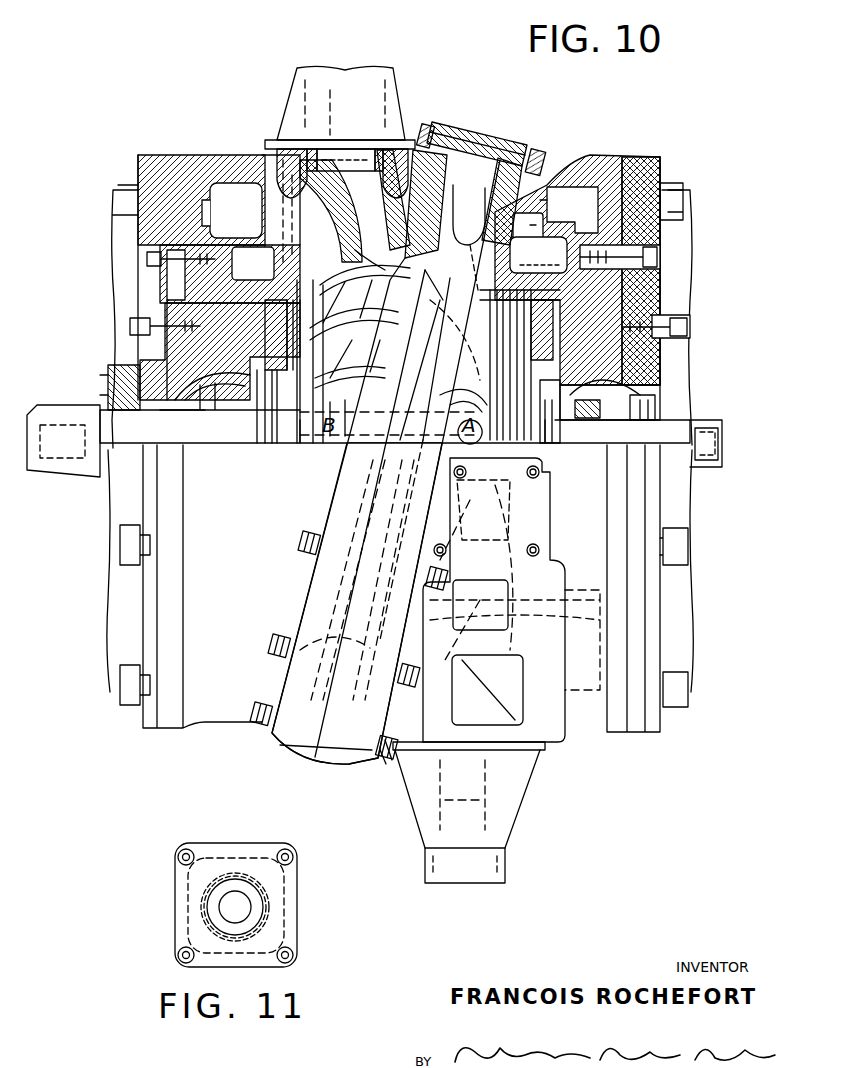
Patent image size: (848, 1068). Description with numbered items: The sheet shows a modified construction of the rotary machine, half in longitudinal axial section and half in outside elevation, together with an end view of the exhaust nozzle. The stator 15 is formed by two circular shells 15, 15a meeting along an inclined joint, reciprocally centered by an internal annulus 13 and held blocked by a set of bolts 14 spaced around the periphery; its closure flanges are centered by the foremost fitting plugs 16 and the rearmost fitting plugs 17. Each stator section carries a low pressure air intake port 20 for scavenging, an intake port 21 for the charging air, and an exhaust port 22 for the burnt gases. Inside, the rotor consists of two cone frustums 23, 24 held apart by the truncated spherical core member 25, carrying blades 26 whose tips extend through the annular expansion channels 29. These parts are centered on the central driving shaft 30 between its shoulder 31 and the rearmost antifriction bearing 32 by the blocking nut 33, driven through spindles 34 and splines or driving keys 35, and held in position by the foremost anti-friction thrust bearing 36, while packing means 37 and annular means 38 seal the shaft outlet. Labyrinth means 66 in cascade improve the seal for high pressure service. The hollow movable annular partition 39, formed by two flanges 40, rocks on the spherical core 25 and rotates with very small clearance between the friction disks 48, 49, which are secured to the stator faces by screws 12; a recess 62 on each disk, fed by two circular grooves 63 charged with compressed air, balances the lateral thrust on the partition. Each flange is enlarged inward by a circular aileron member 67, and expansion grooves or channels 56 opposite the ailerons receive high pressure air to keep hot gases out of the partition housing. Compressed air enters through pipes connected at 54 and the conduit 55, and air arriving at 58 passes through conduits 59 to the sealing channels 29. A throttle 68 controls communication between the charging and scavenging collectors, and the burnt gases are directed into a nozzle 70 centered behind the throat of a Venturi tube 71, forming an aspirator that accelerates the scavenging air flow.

In FIG. 10, the screws 12 is at (455, 136).
In FIG. 10, the internal annulus 13 is at (497, 188).
In FIG. 10, the bolts 14 is at (428, 128).
In FIG. 10, the stator 15 is at (276, 283).
In FIG. 10, the stator shell 15a is at (536, 226).
In FIG. 10, the foremost closure flange fitting plugs 16 is at (165, 287).
In FIG. 10, the rearmost closure flange fitting plugs 17 is at (655, 281).
In FIG. 10, the low pressure air intake port 20 is at (486, 702).
In FIG. 10, the intake port 21 is at (492, 520).
In FIG. 10, the exhaust port 22 is at (390, 762).
In FIG. 10, the cone frustum 23 is at (335, 320).
In FIG. 10, the cone frustum 24 is at (435, 410).
In FIG. 10, the truncated spherical core member 25 is at (335, 414).
In FIG. 10, the blades 26 is at (330, 294).
In FIG. 10, the annular expansion channels 29 is at (480, 325).
In FIG. 10, the central driving shaft 30 is at (40, 416).
In FIG. 10, the shoulder 31 is at (274, 437).
In FIG. 10, the rearmost antifriction bearing 32 is at (650, 378).
In FIG. 10, the blocking nut 33 is at (650, 401).
In FIG. 10, the spindles 34 is at (320, 440).
In FIG. 10, the splines or driving keys 35 is at (566, 443).
In FIG. 10, the foremost anti-friction thrust bearing 36 is at (233, 436).
In FIG. 10, the packing means 37 is at (110, 400).
In FIG. 11, the annular means 38 is at (245, 908).
In FIG. 10, the movable annular partition 39 is at (440, 366).
In FIG. 11, the movable annular partition 39 is at (262, 925).
In FIG. 10, the flanges 40 is at (350, 290).
In FIG. 10, the friction disk 48 is at (525, 222).
In FIG. 10, the friction disk 49 is at (380, 200).
In FIG. 10, the compressed air pipe connection 54 is at (400, 160).
In FIG. 10, the conduit 55 is at (400, 216).
In FIG. 10, the expansion grooves or channels 56 is at (417, 355).
In FIG. 10, the compressed air inlet 58 is at (337, 160).
In FIG. 10, the conduits 59 is at (285, 227).
In FIG. 10, the recess 62 is at (463, 204).
In FIG. 10, the circular grooves 63 is at (464, 246).
In FIG. 10, the labyrinth means 66 is at (262, 342).
In FIG. 10, the circular aileron member 67 is at (417, 459).
In FIG. 10, the throttle 68 is at (505, 268).
In FIG. 10, the nozzle 70 is at (312, 165).
In FIG. 10, the Venturi tube 71 is at (328, 82).